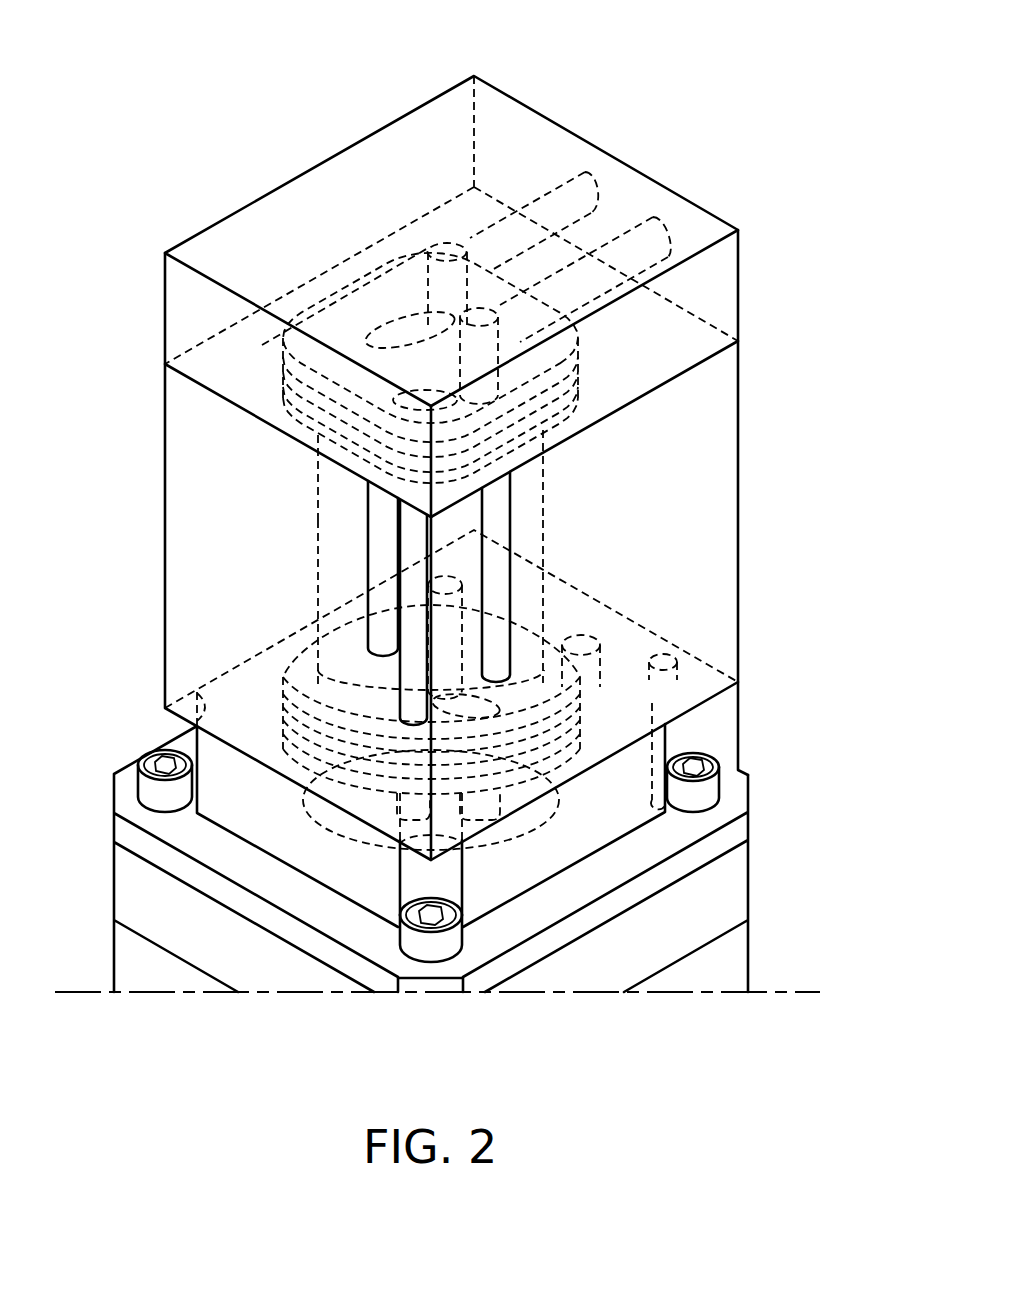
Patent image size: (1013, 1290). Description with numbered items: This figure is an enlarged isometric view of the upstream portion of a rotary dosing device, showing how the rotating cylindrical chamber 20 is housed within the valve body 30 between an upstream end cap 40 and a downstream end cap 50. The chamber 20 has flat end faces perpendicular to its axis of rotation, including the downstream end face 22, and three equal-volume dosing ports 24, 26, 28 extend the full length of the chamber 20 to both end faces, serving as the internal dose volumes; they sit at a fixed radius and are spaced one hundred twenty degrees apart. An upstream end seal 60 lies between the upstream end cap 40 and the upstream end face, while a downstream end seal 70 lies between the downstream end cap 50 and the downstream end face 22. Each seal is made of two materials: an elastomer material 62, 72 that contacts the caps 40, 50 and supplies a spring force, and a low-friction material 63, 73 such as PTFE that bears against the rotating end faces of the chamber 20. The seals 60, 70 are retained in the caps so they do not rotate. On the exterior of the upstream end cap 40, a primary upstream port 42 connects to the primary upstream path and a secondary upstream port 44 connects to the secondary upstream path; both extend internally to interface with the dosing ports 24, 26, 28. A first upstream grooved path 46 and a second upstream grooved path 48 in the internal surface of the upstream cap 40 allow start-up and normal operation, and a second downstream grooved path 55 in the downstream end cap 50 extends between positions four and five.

The rotating cylindrical chamber 20 is at (320, 580).
The downstream end face 22 is at (318, 623).
The dosing port 24 is at (545, 612).
The dosing port 26 is at (300, 657).
The dosing port 28 is at (385, 522).
The valve body 30 is at (700, 462).
The upstream end cap 40 is at (500, 117).
The primary upstream port 42 is at (590, 173).
The secondary upstream port 44 is at (660, 218).
The first upstream grooved path 46 is at (386, 335).
The second upstream grooved path 48 is at (395, 362).
The downstream end cap 50 is at (255, 793).
The second downstream grooved path 55 is at (600, 695).
The upstream end seal 60 is at (555, 365).
The elastomer material 62 is at (300, 358).
The low-friction material 63 is at (300, 418).
The downstream end seal 70 is at (547, 680).
The elastomer material 72 is at (340, 740).
The low-friction material 73 is at (340, 735).